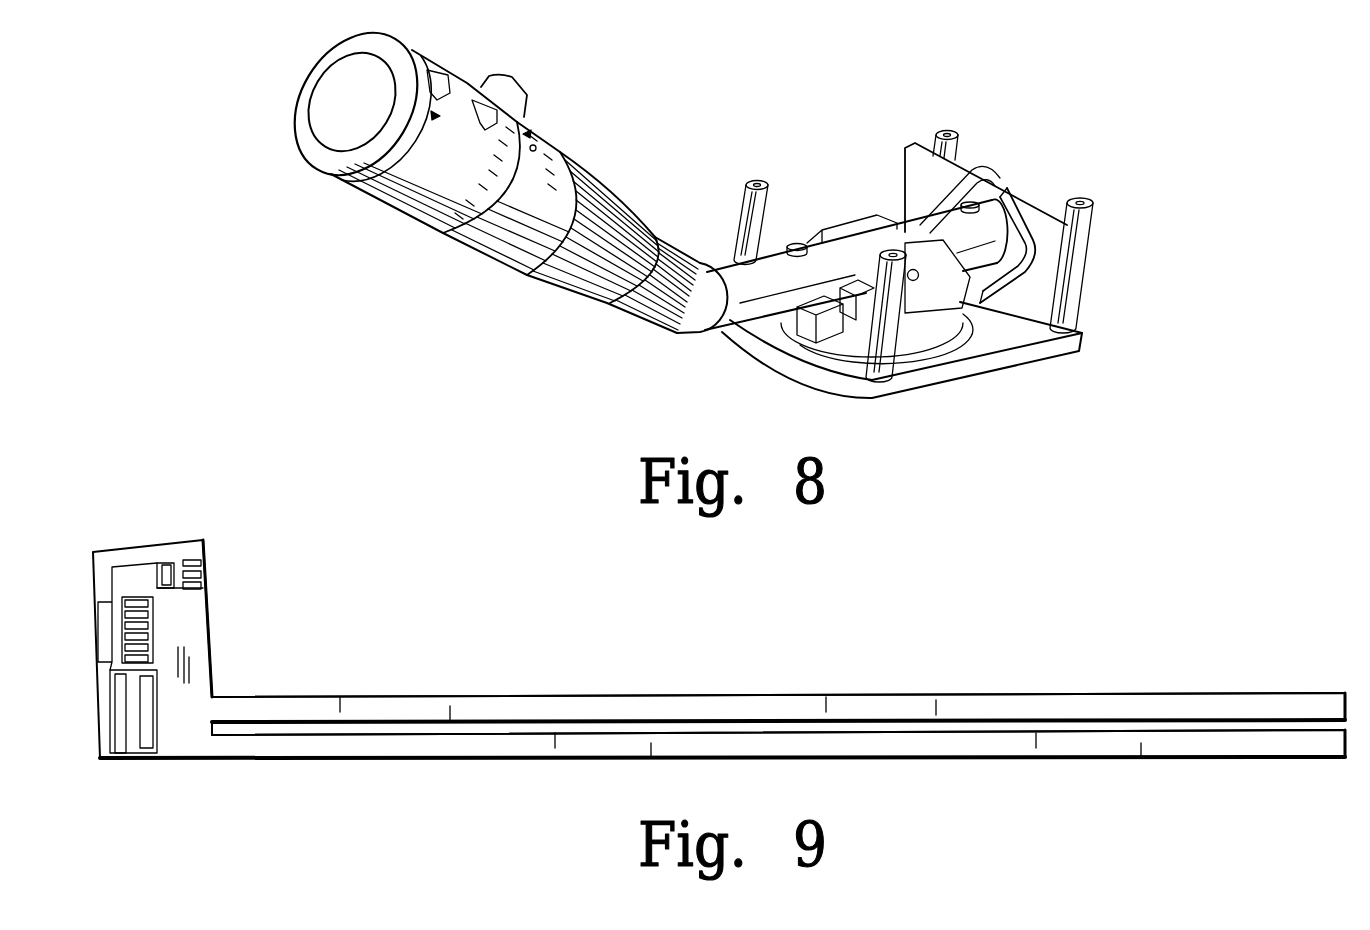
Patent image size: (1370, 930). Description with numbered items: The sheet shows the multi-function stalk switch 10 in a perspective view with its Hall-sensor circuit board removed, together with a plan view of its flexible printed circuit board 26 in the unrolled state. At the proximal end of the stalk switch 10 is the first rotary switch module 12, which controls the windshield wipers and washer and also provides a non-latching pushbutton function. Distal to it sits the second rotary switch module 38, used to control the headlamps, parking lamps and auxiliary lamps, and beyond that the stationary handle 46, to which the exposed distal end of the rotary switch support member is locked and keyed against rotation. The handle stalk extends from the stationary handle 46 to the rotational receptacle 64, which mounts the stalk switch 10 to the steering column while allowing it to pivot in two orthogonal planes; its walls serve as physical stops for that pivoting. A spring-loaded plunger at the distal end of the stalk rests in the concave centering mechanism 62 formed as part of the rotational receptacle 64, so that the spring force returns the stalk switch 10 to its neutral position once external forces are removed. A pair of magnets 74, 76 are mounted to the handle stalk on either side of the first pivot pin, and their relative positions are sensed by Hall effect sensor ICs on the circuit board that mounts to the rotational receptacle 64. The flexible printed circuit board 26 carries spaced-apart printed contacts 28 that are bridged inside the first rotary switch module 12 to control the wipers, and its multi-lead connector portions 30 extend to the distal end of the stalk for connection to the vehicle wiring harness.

In FIG. 8, the stalk switch 10 is at (362, 231).
In FIG. 8, the first rotary switch module 12 is at (454, 70).
In FIG. 8, the second rotary switch module 38 is at (514, 79).
In FIG. 8, the stationary handle 46 is at (569, 152).
In FIG. 8, the magnet 74 is at (798, 244).
In FIG. 8, the magnet 76 is at (973, 202).
In FIG. 8, the concave centering mechanism 62 is at (1004, 177).
In FIG. 8, the rotational receptacle 64 is at (1034, 350).
In FIG. 9, the flexible printed circuit board 26 is at (513, 638).
In FIG. 9, the contacts 28 is at (165, 567).
In FIG. 9, the multi-lead connector portions 30 is at (760, 692).